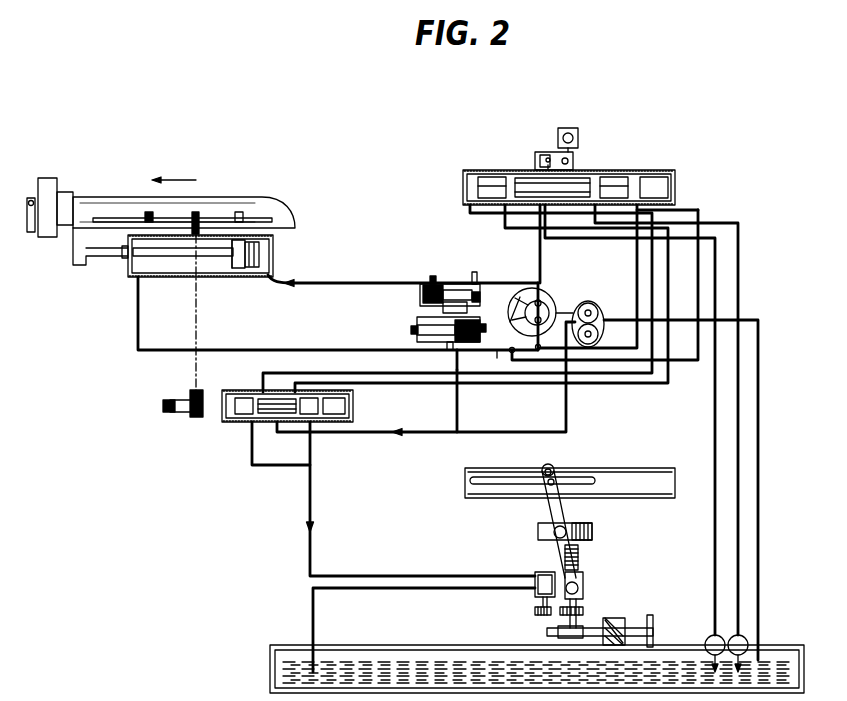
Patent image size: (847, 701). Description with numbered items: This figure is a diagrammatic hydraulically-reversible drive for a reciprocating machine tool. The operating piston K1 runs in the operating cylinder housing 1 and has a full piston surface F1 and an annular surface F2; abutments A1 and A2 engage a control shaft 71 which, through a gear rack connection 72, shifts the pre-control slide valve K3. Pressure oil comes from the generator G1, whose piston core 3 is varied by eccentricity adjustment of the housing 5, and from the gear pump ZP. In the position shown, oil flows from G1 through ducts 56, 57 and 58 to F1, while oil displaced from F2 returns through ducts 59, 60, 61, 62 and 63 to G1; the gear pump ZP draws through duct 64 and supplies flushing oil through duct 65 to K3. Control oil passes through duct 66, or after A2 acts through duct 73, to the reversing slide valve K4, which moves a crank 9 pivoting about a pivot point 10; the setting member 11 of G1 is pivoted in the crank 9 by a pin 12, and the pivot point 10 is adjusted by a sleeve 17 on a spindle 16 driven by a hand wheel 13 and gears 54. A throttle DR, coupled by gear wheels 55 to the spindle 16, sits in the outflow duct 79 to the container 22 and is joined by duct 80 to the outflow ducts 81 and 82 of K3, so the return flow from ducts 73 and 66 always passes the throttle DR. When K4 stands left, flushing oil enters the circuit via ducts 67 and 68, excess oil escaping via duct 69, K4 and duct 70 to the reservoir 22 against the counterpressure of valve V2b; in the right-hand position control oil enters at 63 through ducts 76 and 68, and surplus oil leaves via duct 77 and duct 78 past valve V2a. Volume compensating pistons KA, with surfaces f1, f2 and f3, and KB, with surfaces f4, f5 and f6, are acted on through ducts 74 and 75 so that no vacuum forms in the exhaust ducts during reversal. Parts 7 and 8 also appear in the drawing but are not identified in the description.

The operating cylinder housing 1 is at (176, 278).
The operating piston K1 is at (245, 276).
The full piston surface F1 is at (259, 252).
The annular surface F2 is at (233, 266).
The abutment A1 is at (146, 214).
The abutment A2 is at (243, 216).
The control shaft 71 is at (199, 216).
The gear rack connection 72 is at (182, 412).
The duct 58 is at (352, 281).
The duct 56 is at (536, 282).
The duct 59 is at (137, 301).
The duct 77 is at (541, 259).
The piston core 3 is at (552, 304).
The generator G1 is at (541, 296).
The generator housing 5 is at (514, 303).
The volume compensating piston KA is at (419, 297).
The volume compensating piston KB is at (416, 331).
The duct 57 is at (449, 289).
The duct 75 is at (449, 312).
The surface f1 is at (480, 298).
The surface f2 is at (474, 283).
The surface f3 is at (430, 280).
The surface f4 is at (481, 328).
The surface f5 is at (448, 347).
The surface f6 is at (413, 328).
The duct 60 is at (459, 353).
The duct 61 is at (498, 362).
The duct 62 is at (512, 348).
The duct 63 is at (541, 346).
The gear pump ZP is at (589, 302).
The duct 64 is at (606, 328).
The reversing slide valve K4 is at (600, 178).
The bar 7 is at (658, 170).
The pivot 8 is at (546, 160).
The crank 9 is at (535, 161).
The pivot point 10 is at (569, 163).
The setting member 11 is at (594, 532).
The pin 12 is at (566, 526).
The spindle 16 is at (580, 558).
The sleeve 17 is at (578, 137).
The duct 73 is at (469, 214).
The duct 66 is at (670, 214).
The duct 76 is at (504, 229).
The duct 78 is at (586, 241).
The duct 67 is at (640, 208).
The duct 69 is at (700, 215).
The duct 70 is at (740, 233).
The duct 68 is at (636, 290).
The duct 65 is at (568, 402).
The duct 74 is at (456, 403).
The pre-control slide valve K3 is at (233, 392).
The outflow duct 81 is at (250, 441).
The outflow duct 82 is at (318, 435).
The duct 80 is at (309, 519).
The outflow duct 79 is at (312, 614).
The throttle DR is at (542, 571).
The gear wheels 55 is at (556, 617).
The gears 54 is at (575, 637).
The hand wheel 13 is at (649, 615).
The reservoir 22 is at (805, 669).
The counterpressure valve V2a is at (710, 636).
The valve V2b is at (747, 640).